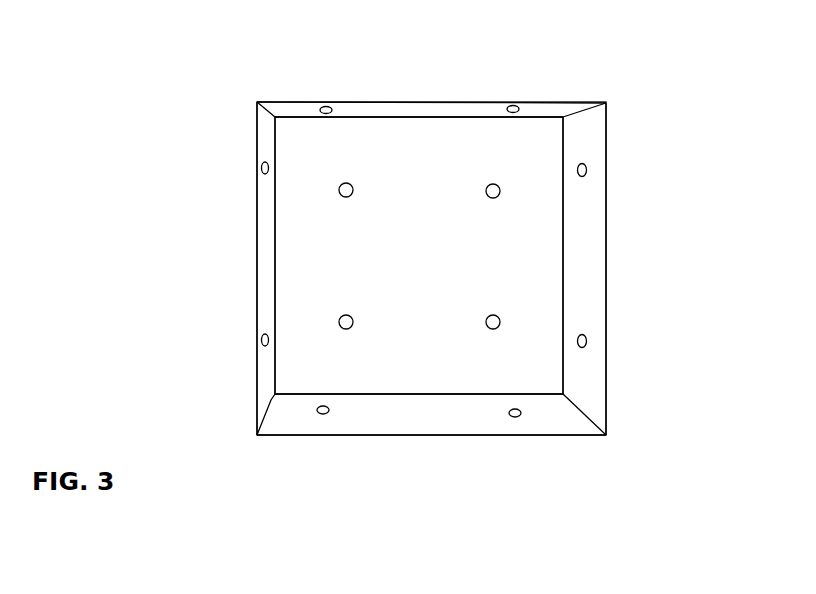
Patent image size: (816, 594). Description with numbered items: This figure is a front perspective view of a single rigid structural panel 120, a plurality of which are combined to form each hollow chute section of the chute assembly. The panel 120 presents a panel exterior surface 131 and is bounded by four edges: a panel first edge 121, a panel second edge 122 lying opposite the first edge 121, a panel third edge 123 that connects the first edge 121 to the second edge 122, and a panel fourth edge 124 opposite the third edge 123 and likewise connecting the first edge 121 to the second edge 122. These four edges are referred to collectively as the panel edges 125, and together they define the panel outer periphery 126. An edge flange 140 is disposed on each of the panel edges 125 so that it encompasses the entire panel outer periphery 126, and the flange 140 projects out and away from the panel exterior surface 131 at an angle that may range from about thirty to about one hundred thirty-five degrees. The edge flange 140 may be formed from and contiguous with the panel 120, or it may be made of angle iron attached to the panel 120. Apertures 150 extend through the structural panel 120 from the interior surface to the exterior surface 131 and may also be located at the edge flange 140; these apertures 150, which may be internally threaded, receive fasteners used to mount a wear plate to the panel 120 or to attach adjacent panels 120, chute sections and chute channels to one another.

The structural panel 120 is at (623, 68).
The panel first edge 121 is at (400, 117).
The panel second edge 122 is at (455, 395).
The panel third edge 123 is at (275, 227).
The panel fourth edge 124 is at (563, 245).
The panel edges 125 is at (274, 150).
The panel outer periphery 126 is at (573, 363).
The panel exterior surface 131 is at (302, 365).
The edge flange 140 is at (288, 420).
The aperture 150 is at (346, 322).